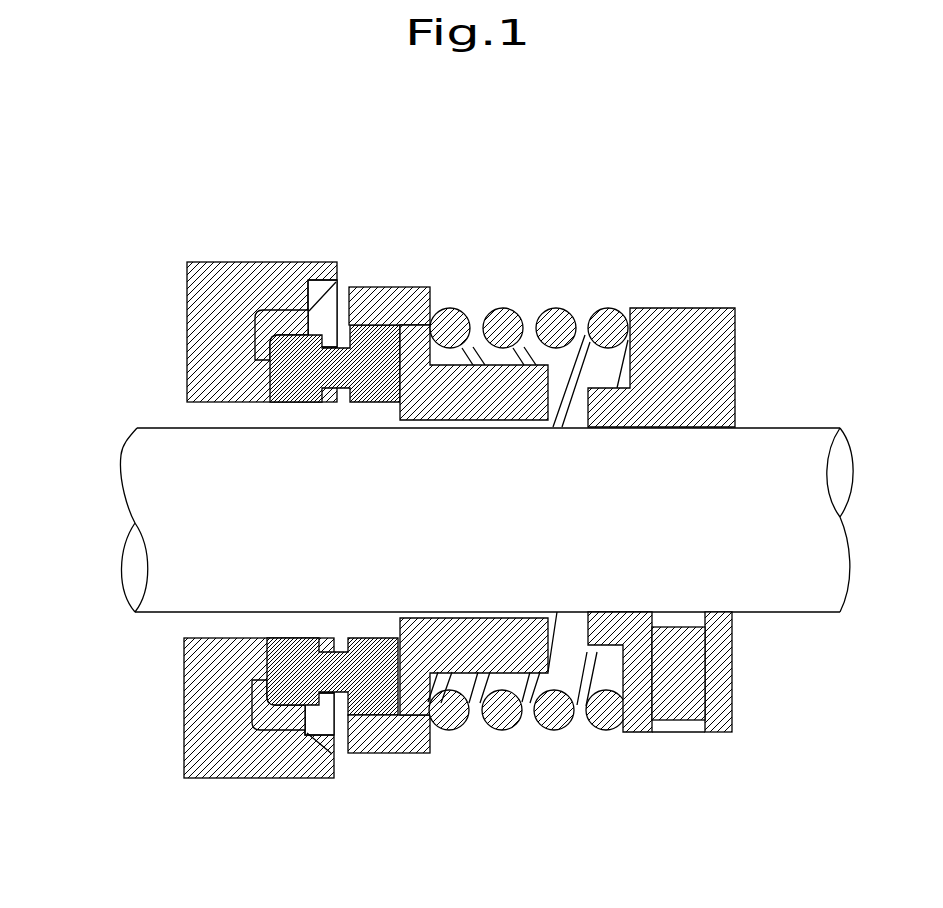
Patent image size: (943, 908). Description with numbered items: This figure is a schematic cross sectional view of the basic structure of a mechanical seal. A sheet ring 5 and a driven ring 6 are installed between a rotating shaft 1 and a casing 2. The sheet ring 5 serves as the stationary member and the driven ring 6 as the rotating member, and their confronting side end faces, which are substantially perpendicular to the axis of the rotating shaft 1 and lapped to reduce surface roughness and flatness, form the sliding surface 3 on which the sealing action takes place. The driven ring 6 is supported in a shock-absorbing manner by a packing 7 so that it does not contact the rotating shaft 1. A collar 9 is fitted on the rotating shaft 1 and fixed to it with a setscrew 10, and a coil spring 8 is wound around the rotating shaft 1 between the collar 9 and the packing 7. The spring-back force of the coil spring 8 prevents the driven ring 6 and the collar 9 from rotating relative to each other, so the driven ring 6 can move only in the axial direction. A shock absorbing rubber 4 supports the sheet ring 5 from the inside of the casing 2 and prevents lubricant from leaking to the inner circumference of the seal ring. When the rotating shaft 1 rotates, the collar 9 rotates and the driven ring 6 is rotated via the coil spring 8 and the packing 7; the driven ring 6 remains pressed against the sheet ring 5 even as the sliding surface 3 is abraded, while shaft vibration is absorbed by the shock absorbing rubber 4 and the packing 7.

The rotating shaft 1 is at (182, 476).
The casing 2 is at (206, 333).
The sliding surface 3 is at (352, 343).
The shock absorbing rubber 4 is at (268, 266).
The sheet ring 5 is at (283, 312).
The driven ring 6 is at (383, 305).
The packing 7 is at (418, 342).
The coil spring 8 is at (558, 333).
The collar 9 is at (697, 332).
The setscrew 10 is at (683, 667).